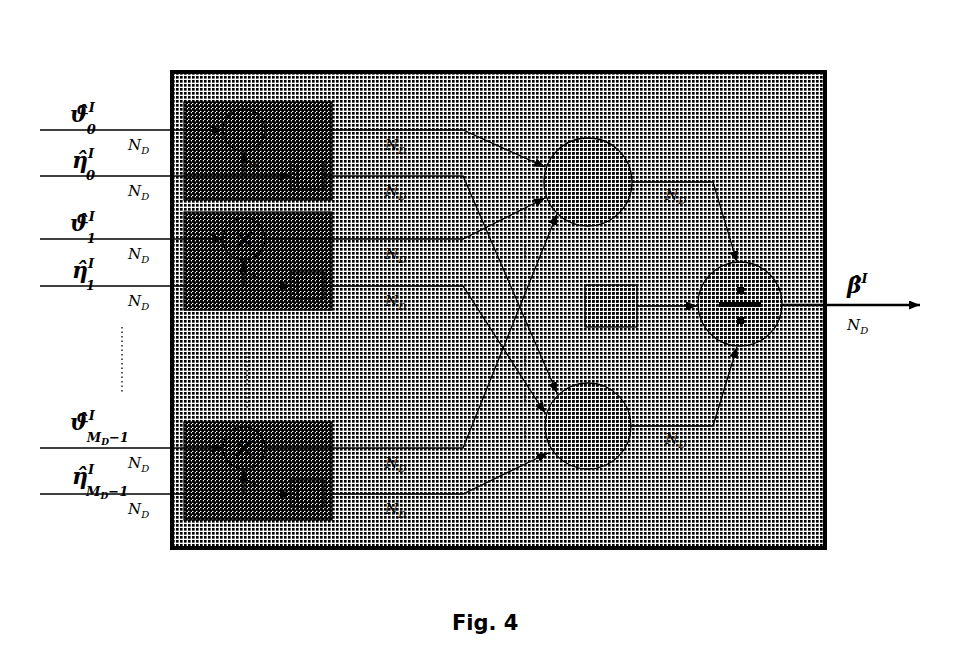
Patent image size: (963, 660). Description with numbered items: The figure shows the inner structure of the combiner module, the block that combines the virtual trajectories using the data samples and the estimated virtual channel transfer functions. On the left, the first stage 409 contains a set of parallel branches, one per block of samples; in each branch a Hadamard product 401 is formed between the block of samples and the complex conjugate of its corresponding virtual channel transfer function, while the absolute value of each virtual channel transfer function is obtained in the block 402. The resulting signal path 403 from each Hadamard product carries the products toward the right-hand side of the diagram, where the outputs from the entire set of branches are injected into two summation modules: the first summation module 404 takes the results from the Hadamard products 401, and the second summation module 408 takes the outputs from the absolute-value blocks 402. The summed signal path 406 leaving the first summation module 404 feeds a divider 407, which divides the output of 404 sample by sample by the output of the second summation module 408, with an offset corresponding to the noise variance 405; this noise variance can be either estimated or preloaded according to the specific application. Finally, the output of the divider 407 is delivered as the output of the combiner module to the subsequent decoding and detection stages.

The Hadamard product 401 is at (262, 112).
The absolute value block 402 is at (298, 480).
The product signal path 403 is at (425, 130).
The first summation module 404 is at (592, 138).
The noise variance 405 is at (605, 285).
The summed signal path 406 is at (706, 178).
The divider 407 is at (768, 268).
The second summation module 408 is at (593, 383).
The first stage 409 is at (213, 100).